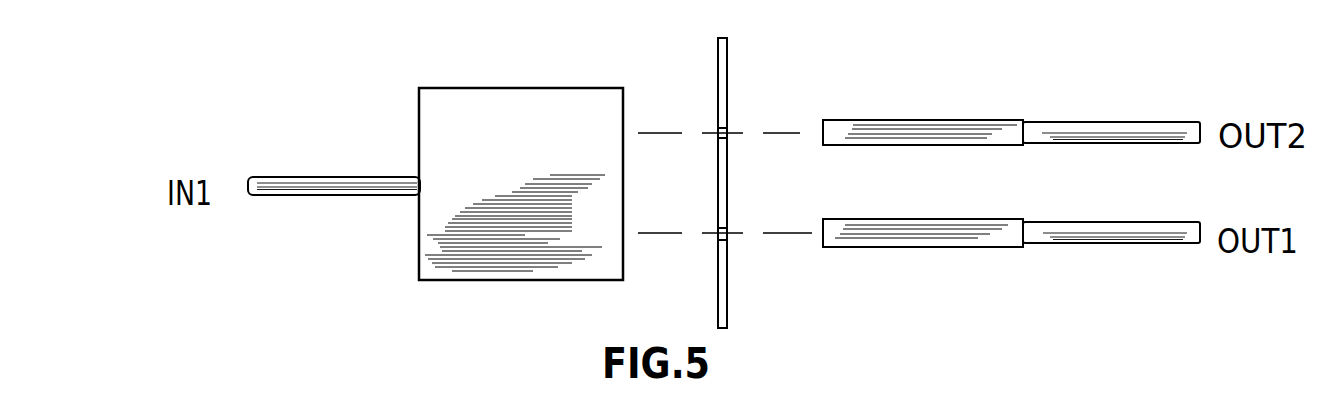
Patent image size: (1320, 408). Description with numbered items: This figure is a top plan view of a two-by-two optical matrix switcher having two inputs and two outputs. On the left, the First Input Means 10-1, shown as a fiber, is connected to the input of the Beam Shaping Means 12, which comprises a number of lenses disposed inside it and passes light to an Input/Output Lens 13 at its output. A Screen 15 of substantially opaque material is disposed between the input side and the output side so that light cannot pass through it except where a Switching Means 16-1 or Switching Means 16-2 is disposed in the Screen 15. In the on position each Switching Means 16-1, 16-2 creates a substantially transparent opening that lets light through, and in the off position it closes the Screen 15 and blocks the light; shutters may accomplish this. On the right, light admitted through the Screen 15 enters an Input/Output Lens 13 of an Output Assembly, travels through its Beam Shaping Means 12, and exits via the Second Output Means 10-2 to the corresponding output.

The First Input Means 10-1 is at (272, 177).
The Second Output Means 10-2 is at (1097, 120).
The Beam Shaping Means 12 is at (494, 88).
The Input/Output Lens 13 is at (630, 202).
The Screen 15 is at (728, 77).
The Switching Means 16-1 is at (728, 240).
The Switching Means 16-2 is at (730, 128).